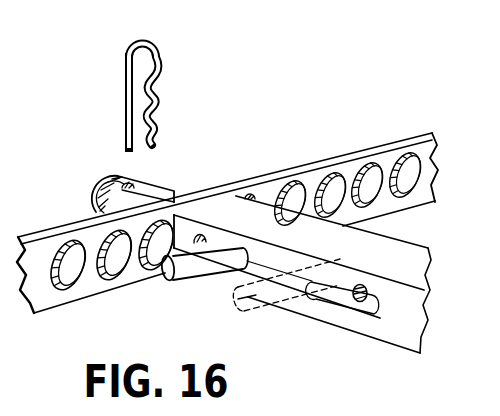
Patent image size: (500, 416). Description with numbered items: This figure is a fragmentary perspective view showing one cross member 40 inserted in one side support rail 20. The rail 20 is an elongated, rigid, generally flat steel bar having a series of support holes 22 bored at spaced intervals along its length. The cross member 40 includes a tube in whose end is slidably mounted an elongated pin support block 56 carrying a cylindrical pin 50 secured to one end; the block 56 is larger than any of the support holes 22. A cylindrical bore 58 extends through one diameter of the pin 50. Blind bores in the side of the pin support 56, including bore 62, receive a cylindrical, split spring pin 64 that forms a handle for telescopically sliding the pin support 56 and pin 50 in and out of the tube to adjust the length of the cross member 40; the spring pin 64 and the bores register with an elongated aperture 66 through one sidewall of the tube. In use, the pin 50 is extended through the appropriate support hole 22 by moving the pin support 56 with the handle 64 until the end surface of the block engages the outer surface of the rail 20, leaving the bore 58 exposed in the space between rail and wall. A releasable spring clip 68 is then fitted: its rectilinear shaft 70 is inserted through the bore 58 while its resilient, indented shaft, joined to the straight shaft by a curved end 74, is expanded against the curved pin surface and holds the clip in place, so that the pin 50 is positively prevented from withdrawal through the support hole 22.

The side support rail 20 is at (300, 163).
The support holes 22 is at (125, 277).
The cross member 40 is at (384, 348).
The pin 50 is at (97, 191).
The pin support block 56 is at (327, 284).
The cylindrical bore 58 is at (134, 182).
The blind bore 62 is at (356, 299).
The spring pin 64 is at (191, 281).
The elongated aperture 66 is at (326, 298).
The spring clip 68 is at (124, 77).
The rectilinear shaft 70 is at (124, 69).
The curved end 74 is at (150, 42).